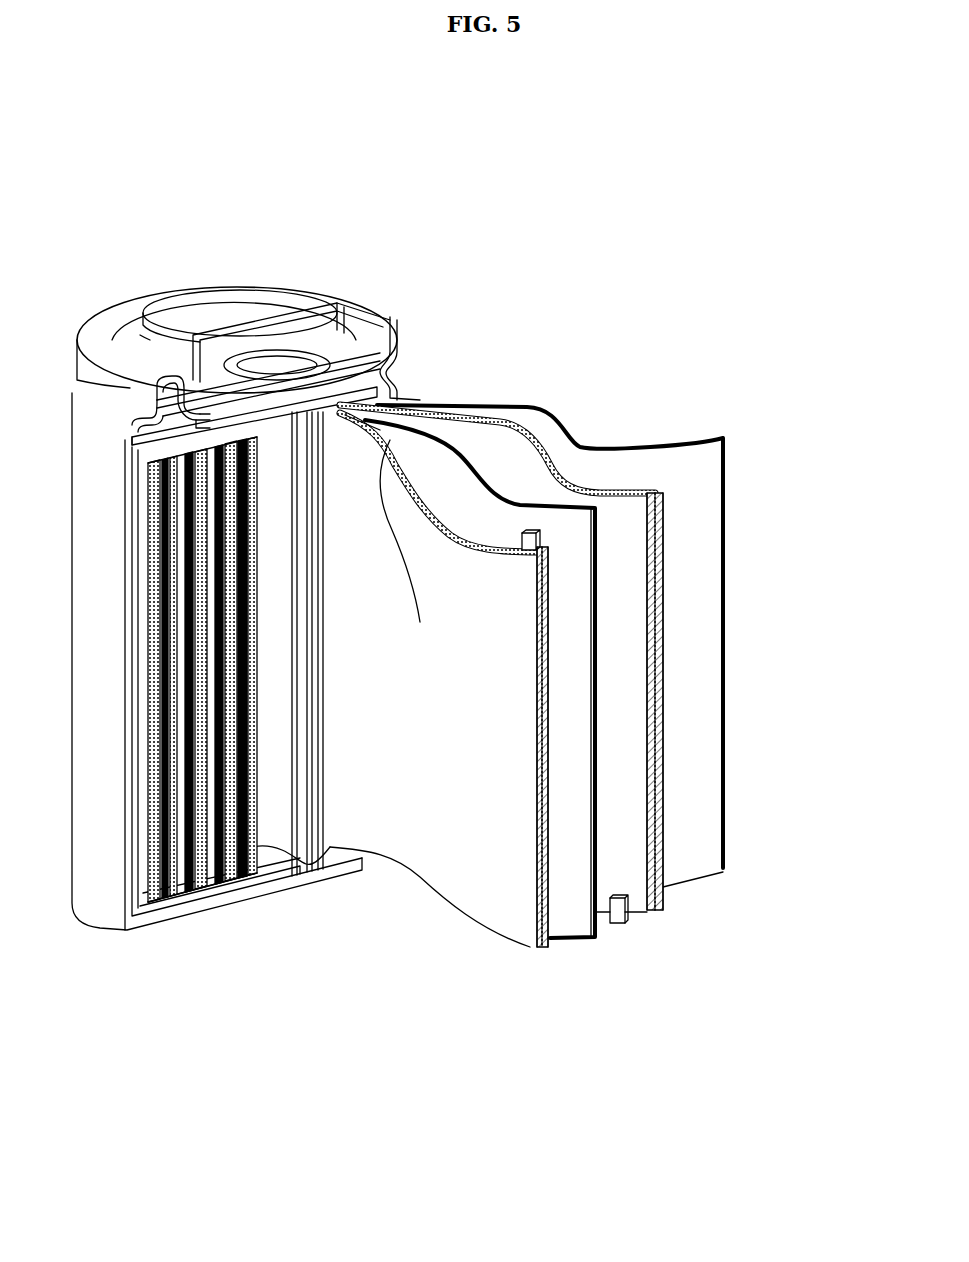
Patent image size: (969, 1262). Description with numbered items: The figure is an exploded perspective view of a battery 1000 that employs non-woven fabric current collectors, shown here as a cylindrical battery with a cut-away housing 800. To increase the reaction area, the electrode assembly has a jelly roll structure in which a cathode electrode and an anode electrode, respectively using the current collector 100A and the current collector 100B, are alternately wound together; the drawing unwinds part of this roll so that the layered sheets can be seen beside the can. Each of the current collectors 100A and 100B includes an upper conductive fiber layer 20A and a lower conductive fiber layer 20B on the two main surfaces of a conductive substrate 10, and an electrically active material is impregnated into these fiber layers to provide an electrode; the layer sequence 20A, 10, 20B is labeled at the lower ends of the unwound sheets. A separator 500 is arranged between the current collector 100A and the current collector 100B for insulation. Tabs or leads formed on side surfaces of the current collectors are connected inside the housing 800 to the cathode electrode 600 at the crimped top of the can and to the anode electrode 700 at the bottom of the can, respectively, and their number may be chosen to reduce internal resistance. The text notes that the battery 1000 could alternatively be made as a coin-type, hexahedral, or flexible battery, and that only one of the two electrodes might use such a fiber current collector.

The battery 1000 is at (474, 212).
The cathode electrode 600 is at (233, 300).
The housing 800 is at (97, 847).
The anode electrode 700 is at (203, 911).
The separator 500 is at (597, 540).
The current collector 100A is at (668, 1000).
The current collector 100B is at (788, 880).
The upper conductive fiber layer 20A is at (657, 908).
The conductive substrate 10 is at (657, 910).
The lower conductive fiber layer 20B is at (657, 912).